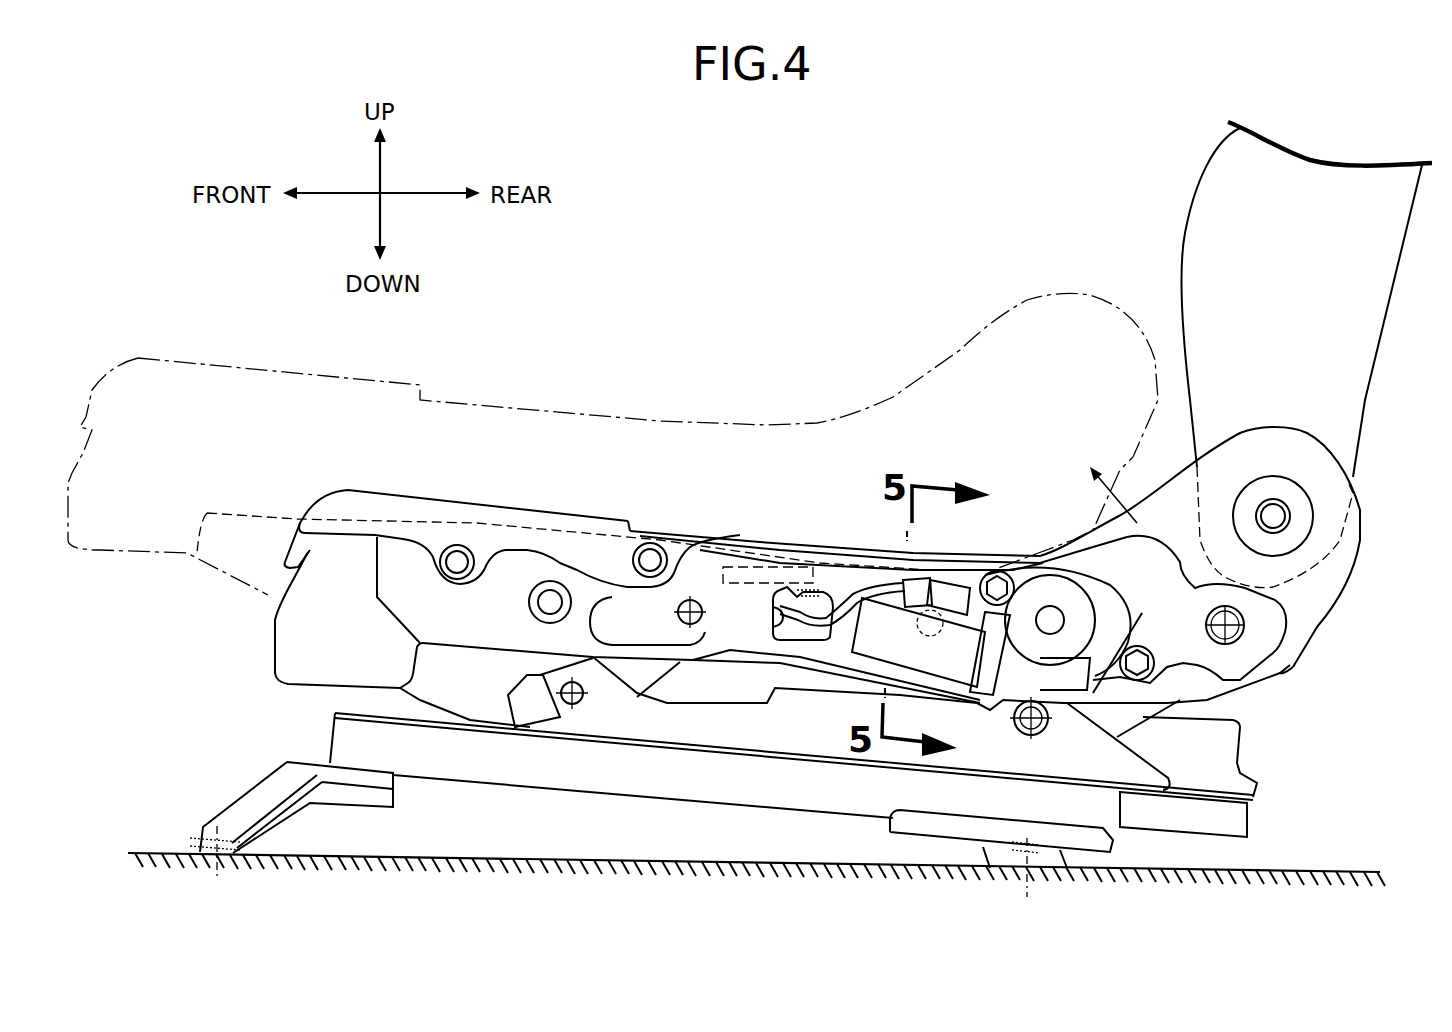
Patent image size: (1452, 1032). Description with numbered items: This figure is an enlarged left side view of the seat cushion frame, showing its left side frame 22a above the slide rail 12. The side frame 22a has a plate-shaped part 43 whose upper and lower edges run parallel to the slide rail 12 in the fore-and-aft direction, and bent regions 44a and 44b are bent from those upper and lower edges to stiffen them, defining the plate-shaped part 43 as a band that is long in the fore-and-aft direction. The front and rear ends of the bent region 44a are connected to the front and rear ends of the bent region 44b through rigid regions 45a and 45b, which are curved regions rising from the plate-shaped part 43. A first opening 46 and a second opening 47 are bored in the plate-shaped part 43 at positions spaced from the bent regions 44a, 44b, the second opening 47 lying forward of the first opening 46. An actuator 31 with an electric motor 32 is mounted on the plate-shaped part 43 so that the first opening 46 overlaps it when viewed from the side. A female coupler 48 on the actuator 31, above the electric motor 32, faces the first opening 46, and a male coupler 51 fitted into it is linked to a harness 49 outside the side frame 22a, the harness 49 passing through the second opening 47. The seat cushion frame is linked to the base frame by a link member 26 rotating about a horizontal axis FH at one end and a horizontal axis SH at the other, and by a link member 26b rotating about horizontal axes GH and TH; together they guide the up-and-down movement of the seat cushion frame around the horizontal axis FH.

The slide rail 12 is at (343, 737).
The left side frame 22a is at (1260, 683).
The link member 26 is at (1133, 717).
The link member 26b is at (640, 667).
The actuator 31 is at (1068, 566).
The electric motor 32 is at (900, 650).
The plate-shaped part 43 is at (712, 567).
The bent region 44a is at (770, 548).
The bent region 44b is at (743, 660).
The rigid region 45a is at (610, 590).
The rigid region 45b is at (1113, 660).
The first opening 46 is at (917, 628).
The second opening 47 is at (773, 606).
The female coupler 48 is at (953, 582).
The harness 49 is at (855, 593).
The male coupler 51 is at (920, 580).
The horizontal axis TH is at (693, 626).
The horizontal axis GH is at (573, 705).
The horizontal axis FH is at (1027, 730).
The horizontal axis SH is at (1228, 622).